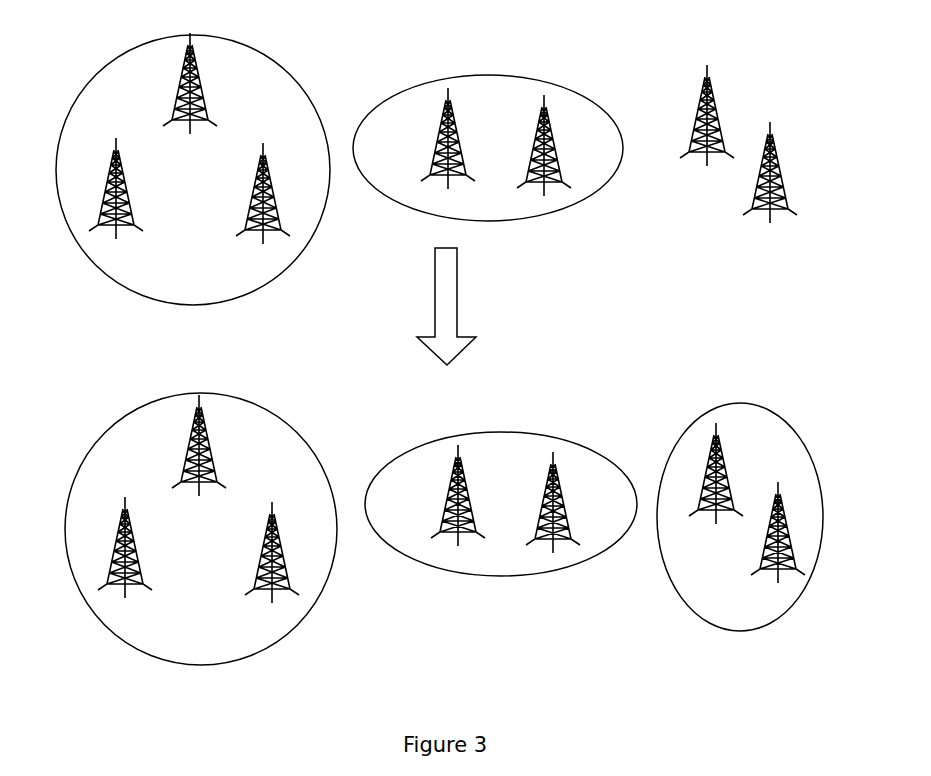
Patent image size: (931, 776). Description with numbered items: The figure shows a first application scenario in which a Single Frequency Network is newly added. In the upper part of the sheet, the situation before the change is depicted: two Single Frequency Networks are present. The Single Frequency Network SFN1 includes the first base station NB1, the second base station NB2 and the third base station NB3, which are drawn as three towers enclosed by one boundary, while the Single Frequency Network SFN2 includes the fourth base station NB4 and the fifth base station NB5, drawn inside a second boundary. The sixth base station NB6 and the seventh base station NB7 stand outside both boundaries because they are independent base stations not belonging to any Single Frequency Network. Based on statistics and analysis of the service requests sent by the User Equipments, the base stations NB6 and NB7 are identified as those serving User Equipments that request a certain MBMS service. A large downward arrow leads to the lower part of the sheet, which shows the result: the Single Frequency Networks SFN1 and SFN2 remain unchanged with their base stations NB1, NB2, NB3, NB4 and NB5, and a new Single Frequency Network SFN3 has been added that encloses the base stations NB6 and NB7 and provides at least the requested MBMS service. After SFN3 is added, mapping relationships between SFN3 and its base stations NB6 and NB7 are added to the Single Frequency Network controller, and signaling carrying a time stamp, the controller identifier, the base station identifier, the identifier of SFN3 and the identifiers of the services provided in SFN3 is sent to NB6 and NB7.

The Single Frequency Network 1 SFN1 is at (272, 60).
The Single Frequency Network 2 SFN2 is at (522, 75).
The Single Frequency Network 3 SFN3 is at (742, 405).
The first base station NB1 is at (194, 276).
The second base station NB2 is at (120, 381).
The third base station NB3 is at (267, 385).
The fourth base station NB4 is at (453, 326).
The fifth base station NB5 is at (548, 330).
The sixth base station NB6 is at (711, 305).
The seventh base station NB7 is at (774, 364).